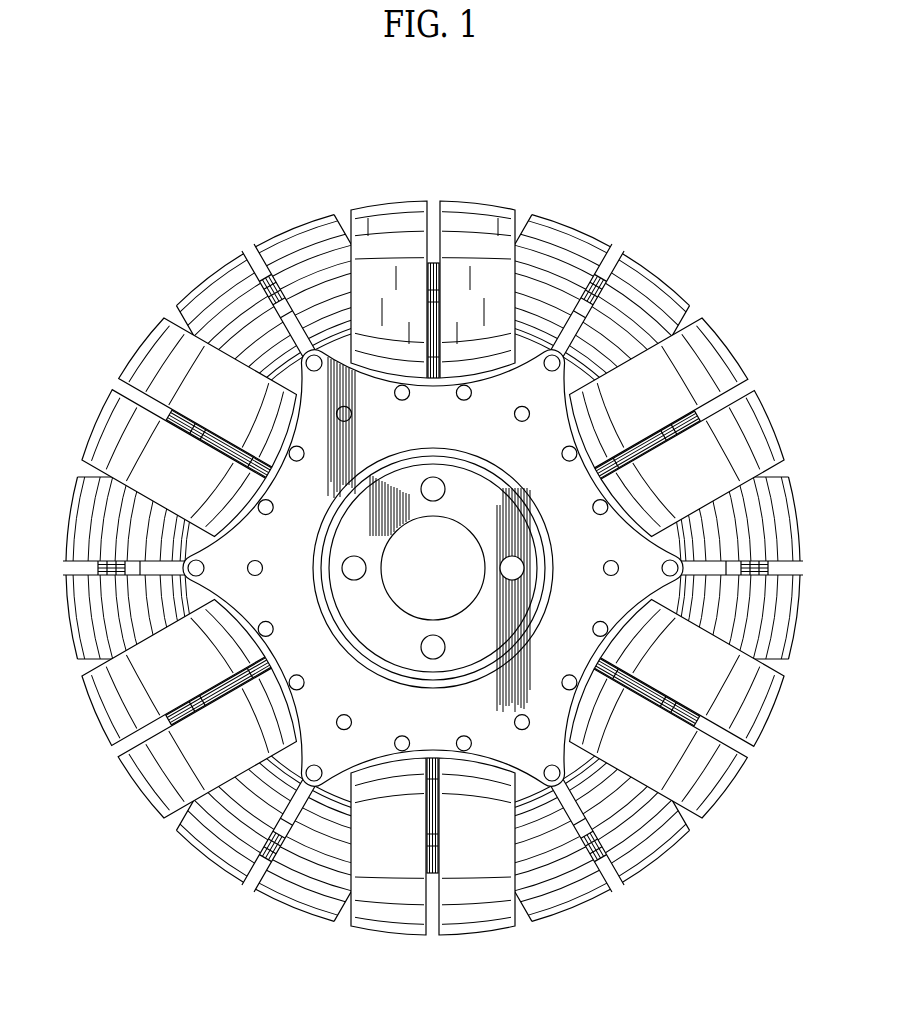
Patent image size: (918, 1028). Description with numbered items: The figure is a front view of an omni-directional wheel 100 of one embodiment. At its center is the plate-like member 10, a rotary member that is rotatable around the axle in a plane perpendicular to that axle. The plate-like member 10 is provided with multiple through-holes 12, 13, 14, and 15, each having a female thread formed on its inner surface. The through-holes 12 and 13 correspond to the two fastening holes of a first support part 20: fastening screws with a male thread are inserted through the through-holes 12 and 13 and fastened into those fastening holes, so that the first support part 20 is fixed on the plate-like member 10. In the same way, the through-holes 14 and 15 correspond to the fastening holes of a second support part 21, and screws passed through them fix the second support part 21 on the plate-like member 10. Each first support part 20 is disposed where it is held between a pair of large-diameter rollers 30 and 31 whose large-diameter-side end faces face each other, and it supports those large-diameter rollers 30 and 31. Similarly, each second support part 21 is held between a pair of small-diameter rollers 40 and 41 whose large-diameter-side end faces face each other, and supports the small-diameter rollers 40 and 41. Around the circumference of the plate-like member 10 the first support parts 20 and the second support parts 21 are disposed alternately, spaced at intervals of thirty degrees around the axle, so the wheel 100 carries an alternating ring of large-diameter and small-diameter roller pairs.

The omni-directional wheel 100 is at (710, 122).
The plate-like member 10 is at (656, 522).
The through-hole 12 is at (426, 324).
The through-hole 13 is at (514, 322).
The through-hole 14 is at (552, 353).
The through-hole 15 is at (527, 428).
The first support part 20 is at (433, 262).
The second support part 21 is at (283, 312).
The large-diameter roller 30 is at (384, 182).
The large-diameter roller 31 is at (476, 181).
The small-diameter roller 40 is at (579, 200).
The small-diameter roller 41 is at (677, 256).